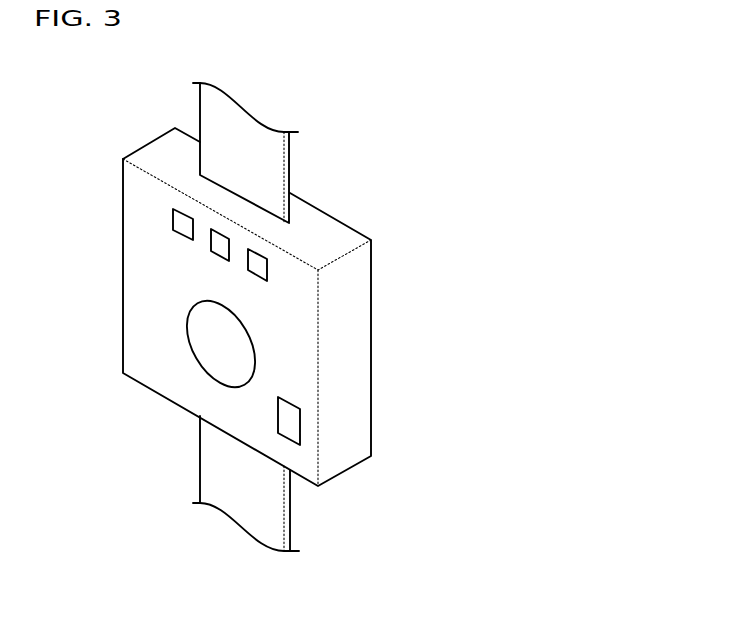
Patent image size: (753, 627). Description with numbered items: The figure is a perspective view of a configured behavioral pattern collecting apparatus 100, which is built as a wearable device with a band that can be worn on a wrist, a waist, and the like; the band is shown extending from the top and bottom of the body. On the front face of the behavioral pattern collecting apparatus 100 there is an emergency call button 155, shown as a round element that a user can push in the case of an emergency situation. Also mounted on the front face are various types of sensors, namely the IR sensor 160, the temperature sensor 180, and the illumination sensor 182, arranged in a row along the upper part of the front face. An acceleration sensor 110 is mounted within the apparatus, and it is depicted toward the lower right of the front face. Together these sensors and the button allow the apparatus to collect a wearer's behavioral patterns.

The behavioral pattern collecting apparatus 100 is at (123, 350).
The acceleration sensor 110 is at (302, 428).
The emergency call button 155 is at (220, 345).
The IR sensor 160 is at (173, 215).
The temperature sensor 180 is at (222, 255).
The illumination sensor 182 is at (267, 268).